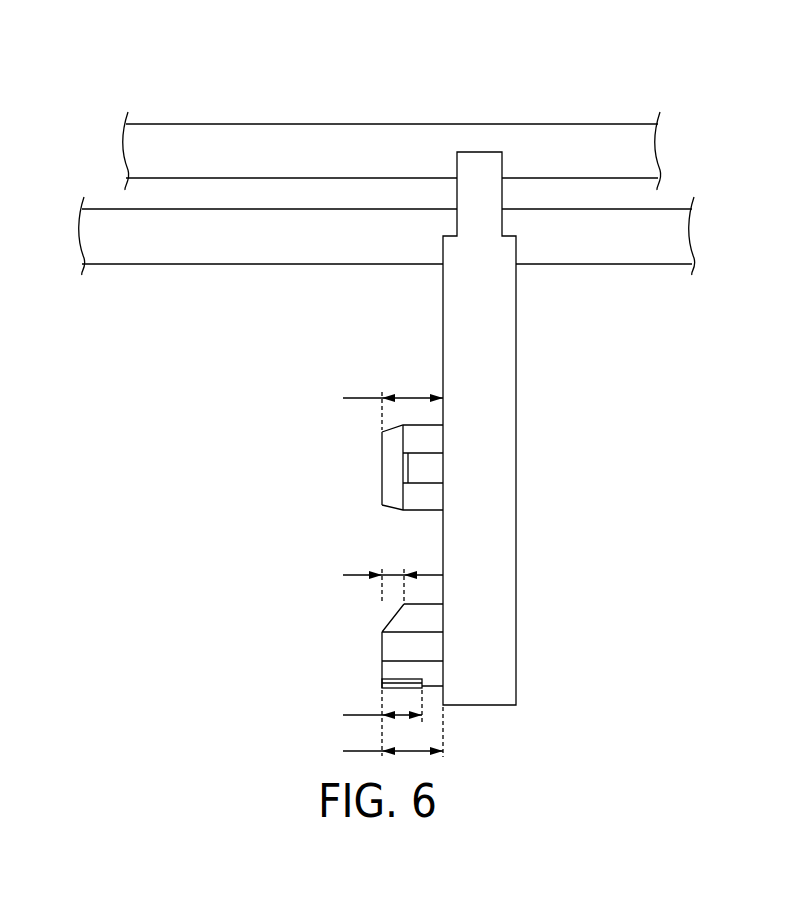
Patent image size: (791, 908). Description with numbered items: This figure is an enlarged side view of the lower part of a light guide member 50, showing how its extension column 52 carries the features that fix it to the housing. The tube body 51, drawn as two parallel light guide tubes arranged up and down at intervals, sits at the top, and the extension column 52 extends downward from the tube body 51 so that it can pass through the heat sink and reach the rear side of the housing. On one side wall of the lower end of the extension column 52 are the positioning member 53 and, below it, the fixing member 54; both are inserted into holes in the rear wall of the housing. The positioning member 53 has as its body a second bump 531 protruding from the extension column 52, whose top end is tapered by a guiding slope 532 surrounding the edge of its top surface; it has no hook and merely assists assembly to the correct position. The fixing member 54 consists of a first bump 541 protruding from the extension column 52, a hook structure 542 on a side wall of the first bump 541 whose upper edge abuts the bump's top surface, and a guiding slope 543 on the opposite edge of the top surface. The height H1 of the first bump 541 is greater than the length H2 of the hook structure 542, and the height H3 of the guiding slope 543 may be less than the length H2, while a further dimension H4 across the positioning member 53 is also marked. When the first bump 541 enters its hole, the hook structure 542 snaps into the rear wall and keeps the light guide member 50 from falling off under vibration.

The light guide member 50 is at (79, 96).
The tube body 51 is at (262, 238).
The extension column 52 is at (460, 302).
The positioning member 53 is at (348, 468).
The second bump 531 is at (413, 497).
The guiding slope 532 is at (393, 455).
The fixing member 54 is at (348, 640).
The first bump 541 is at (397, 647).
The hook structure 542 is at (397, 682).
The guiding slope 543 is at (400, 607).
The height of the first bump H1 is at (375, 736).
The length of the hook structure H2 is at (364, 723).
The height of the guiding slope H3 is at (375, 583).
The dimension H4 is at (375, 407).